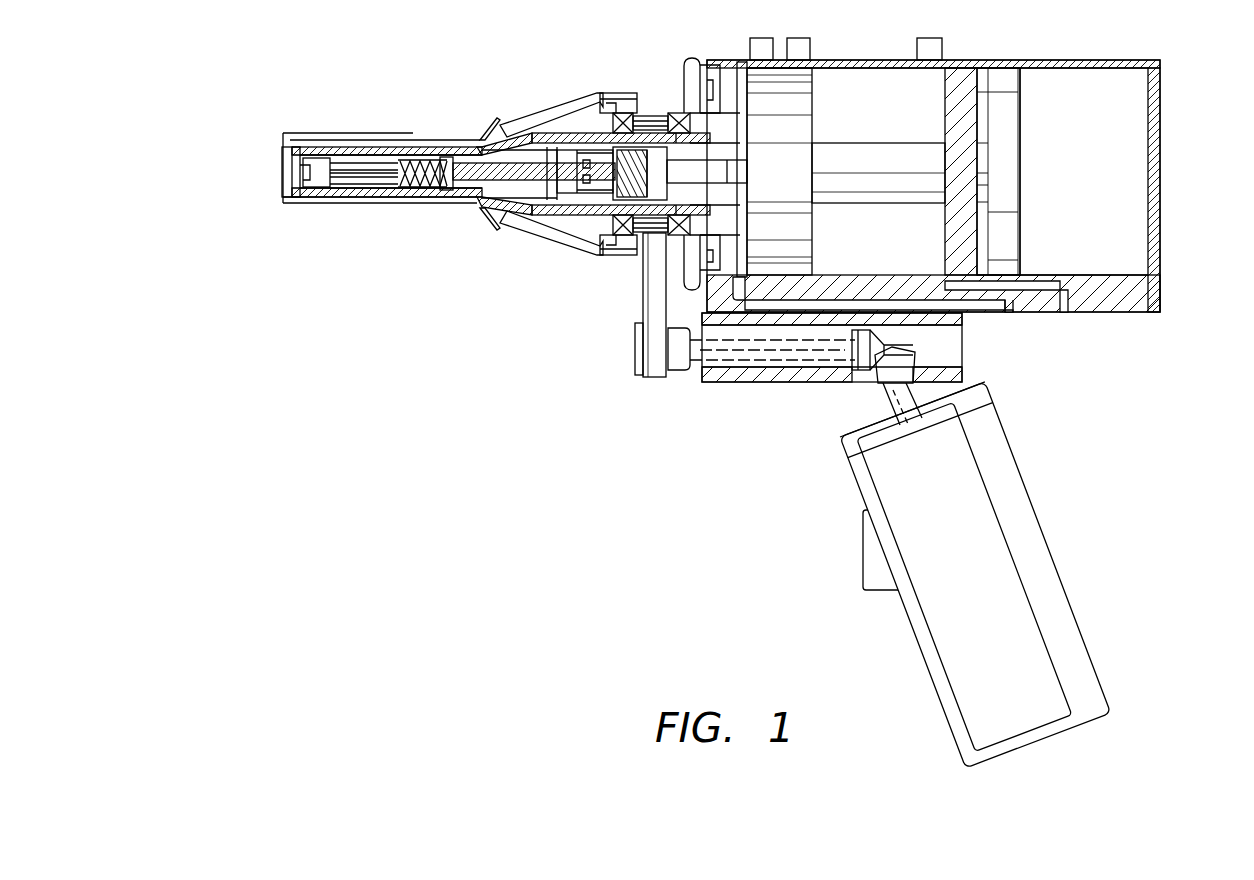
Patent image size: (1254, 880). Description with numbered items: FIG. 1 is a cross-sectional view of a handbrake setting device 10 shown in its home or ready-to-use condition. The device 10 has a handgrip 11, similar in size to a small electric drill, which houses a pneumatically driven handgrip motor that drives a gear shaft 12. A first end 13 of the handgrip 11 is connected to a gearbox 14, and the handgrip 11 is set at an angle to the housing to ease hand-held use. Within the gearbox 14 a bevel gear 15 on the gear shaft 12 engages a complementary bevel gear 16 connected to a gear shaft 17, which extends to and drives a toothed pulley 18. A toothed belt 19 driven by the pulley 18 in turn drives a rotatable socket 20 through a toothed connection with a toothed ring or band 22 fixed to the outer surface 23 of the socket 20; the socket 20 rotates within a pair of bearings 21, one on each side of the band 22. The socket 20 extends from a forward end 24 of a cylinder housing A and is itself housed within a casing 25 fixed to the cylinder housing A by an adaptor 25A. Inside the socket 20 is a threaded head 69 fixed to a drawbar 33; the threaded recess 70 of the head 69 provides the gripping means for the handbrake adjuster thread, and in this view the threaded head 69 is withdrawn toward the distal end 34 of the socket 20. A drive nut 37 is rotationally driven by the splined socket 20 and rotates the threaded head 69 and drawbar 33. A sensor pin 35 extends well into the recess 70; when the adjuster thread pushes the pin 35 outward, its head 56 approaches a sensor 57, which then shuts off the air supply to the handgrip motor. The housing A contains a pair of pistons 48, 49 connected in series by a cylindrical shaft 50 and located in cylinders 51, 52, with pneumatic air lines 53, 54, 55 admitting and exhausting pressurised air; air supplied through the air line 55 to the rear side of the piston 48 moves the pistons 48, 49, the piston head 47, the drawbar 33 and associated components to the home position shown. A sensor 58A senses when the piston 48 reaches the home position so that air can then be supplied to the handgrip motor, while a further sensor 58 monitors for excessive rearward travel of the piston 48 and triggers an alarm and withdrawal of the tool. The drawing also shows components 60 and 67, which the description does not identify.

The handbrake setting device 10 is at (512, 305).
The handgrip 11 is at (1033, 497).
The gear shaft 12 is at (868, 395).
The first end 13 is at (883, 420).
The gearbox 14 is at (720, 382).
The bevel gear 15 is at (917, 355).
The complementary bevel gear 16 is at (880, 343).
The gear shaft 17 is at (807, 360).
The toothed pulley 18 is at (637, 375).
The toothed belt 19 is at (642, 310).
The rotatable socket 20 is at (580, 217).
The bearings 21 is at (672, 113).
The toothed ring or band 22 is at (660, 223).
The outer surface 23 is at (563, 207).
The forward end 24 is at (690, 60).
The casing 25 is at (533, 112).
The adaptor 25A is at (683, 277).
The drawbar 33 is at (477, 183).
The distal end 34 is at (280, 180).
The sensor pin 35 is at (327, 163).
The drive nut 37 is at (417, 190).
The piston head 47 is at (587, 150).
The piston 48 is at (813, 100).
The piston 49 is at (1022, 95).
The cylindrical shaft 50 is at (883, 143).
The cylinder 51 is at (902, 93).
The cylinder 52 is at (1132, 143).
The pneumatic air line 53 is at (748, 290).
The pneumatic air line 54 is at (1010, 313).
The pneumatic air line 55 is at (1065, 312).
The head 56 is at (617, 167).
The sensor 57 is at (728, 173).
The sensor 58 is at (925, 38).
The sensor 58A is at (758, 38).
The spring 60 is at (433, 165).
The upper sleeve 67 is at (380, 167).
The threaded head 69 is at (353, 190).
The recess 70 is at (313, 170).
The cylinder housing A is at (985, 62).